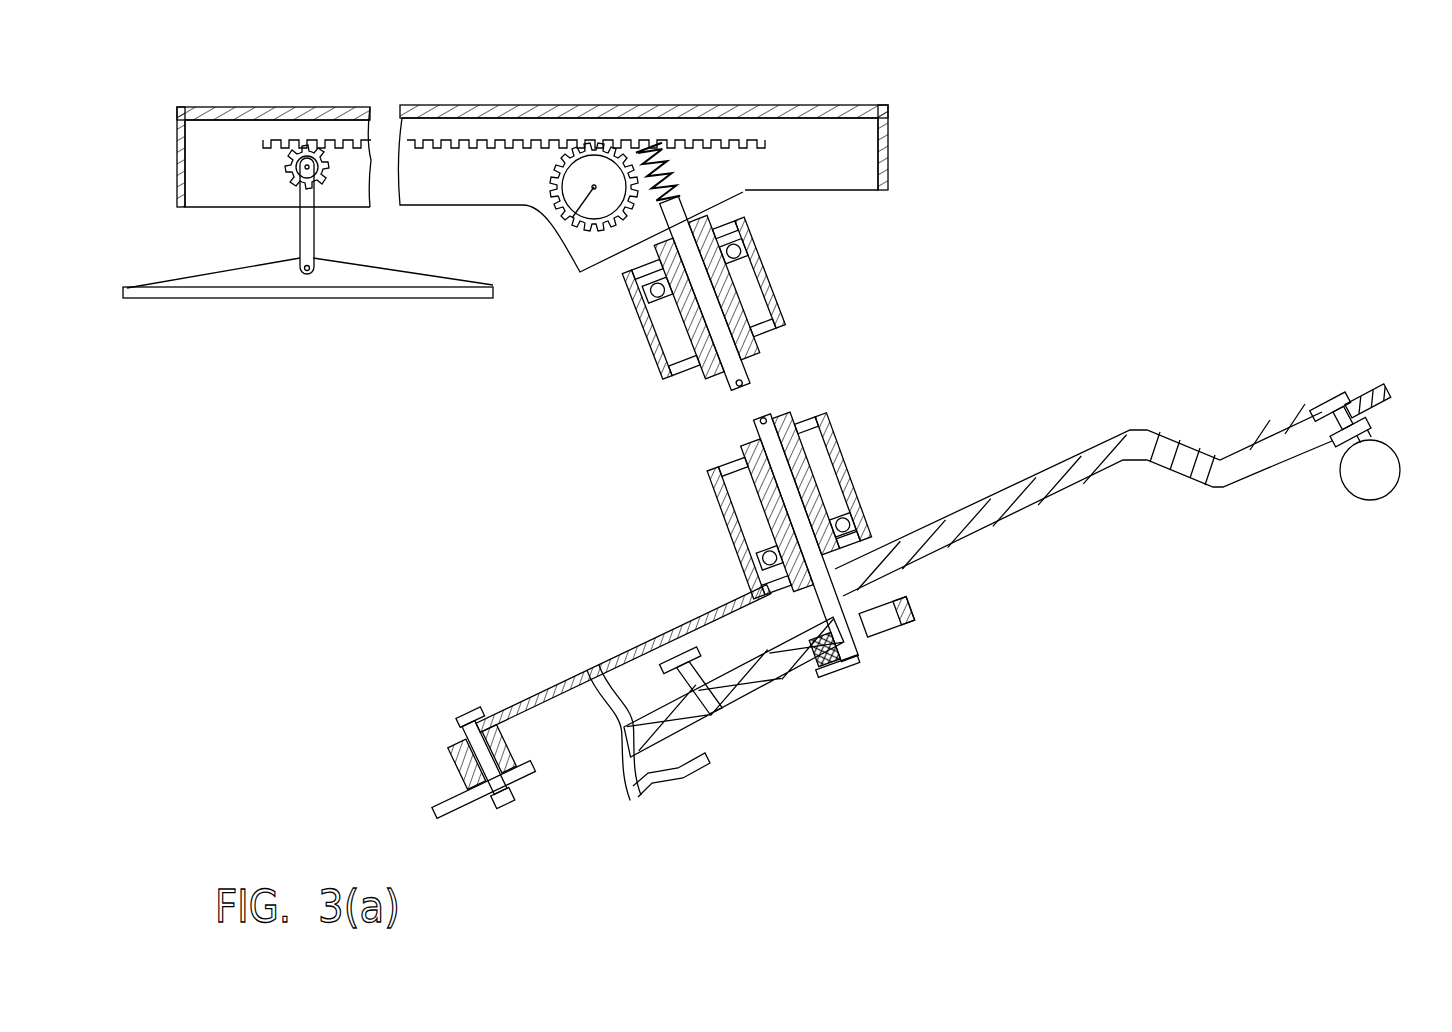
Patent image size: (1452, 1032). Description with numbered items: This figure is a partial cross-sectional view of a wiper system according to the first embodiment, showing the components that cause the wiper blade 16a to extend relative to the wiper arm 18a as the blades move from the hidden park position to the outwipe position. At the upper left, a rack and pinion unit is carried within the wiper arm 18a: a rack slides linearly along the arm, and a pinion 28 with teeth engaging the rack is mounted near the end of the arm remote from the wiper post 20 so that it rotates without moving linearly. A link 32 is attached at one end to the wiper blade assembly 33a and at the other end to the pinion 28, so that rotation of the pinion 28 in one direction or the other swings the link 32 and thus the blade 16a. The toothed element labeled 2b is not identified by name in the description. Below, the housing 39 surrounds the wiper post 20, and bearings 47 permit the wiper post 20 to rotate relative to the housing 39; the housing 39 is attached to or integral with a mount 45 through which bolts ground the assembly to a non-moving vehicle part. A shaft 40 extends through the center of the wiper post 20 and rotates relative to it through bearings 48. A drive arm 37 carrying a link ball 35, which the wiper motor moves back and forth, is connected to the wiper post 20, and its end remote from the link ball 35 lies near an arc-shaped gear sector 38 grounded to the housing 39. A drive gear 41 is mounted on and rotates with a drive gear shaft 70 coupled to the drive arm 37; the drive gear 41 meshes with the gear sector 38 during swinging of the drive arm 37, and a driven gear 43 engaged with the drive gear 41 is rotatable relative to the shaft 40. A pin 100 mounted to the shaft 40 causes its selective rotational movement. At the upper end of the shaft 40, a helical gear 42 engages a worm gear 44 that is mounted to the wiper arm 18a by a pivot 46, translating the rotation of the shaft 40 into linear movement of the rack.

The pinion 28 is at (300, 148).
The wiper arm 18a is at (425, 108).
The rack 2b is at (540, 138).
The worm gear 44 is at (588, 150).
The helical gear 42 is at (680, 175).
The bearings 47 is at (745, 255).
The pivot 46 is at (572, 220).
The wiper blade assembly 33a is at (185, 272).
The link 32 is at (310, 232).
The wiper blade 16a is at (305, 292).
The housing 39 is at (651, 330).
The wiper post 20 is at (752, 357).
The bearings 48 is at (747, 457).
The drive arm 37 is at (1025, 480).
The link ball 35 is at (1378, 480).
The driven gear 43 is at (905, 608).
The shaft 40 is at (862, 660).
The pin 100 is at (843, 673).
The drive gear 41 is at (787, 682).
The mount 45 is at (452, 736).
The drive gear shaft 70 is at (713, 708).
The arc-shaped gear sector 38 is at (627, 790).